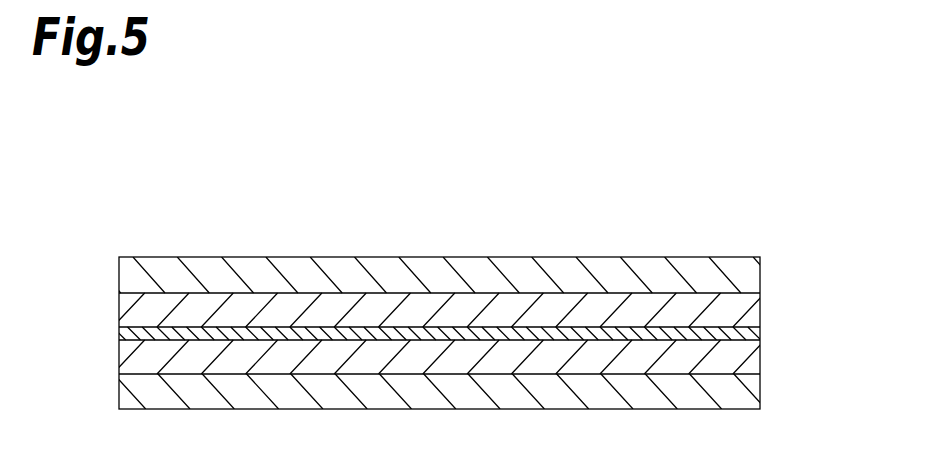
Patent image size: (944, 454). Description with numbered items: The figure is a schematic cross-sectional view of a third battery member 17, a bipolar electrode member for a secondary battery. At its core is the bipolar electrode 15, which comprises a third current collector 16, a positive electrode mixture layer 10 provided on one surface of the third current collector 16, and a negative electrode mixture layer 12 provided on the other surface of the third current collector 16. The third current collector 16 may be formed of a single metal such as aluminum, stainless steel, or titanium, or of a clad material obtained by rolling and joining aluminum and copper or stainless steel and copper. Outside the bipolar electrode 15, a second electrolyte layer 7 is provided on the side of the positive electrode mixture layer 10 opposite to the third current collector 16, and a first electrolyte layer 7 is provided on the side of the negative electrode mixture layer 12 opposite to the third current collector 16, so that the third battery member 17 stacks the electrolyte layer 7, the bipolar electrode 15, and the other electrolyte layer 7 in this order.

The third battery member 17 is at (722, 216).
The electrolyte layer 7 is at (748, 276).
The negative electrode mixture layer 12 is at (750, 317).
The third current collector 16 is at (752, 334).
The positive electrode mixture layer 10 is at (468, 364).
The bipolar electrode 15 is at (491, 340).